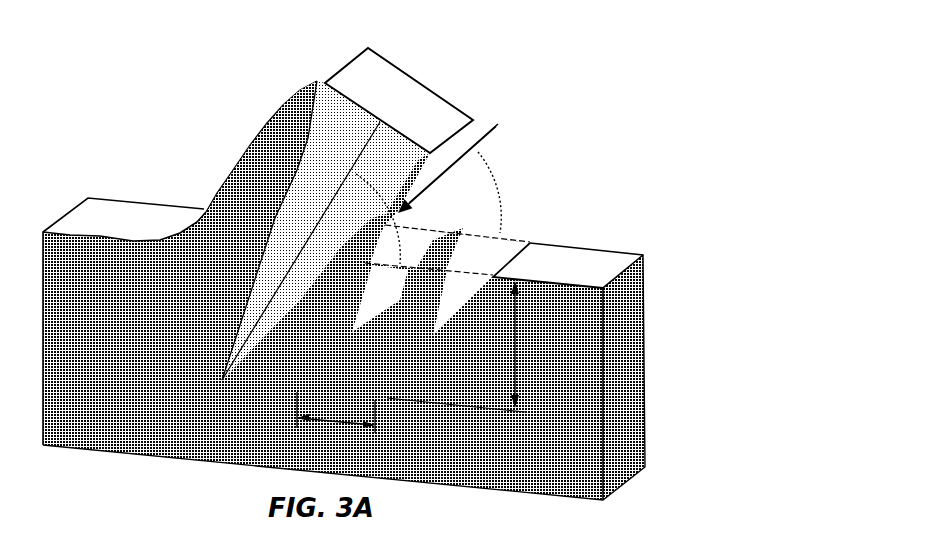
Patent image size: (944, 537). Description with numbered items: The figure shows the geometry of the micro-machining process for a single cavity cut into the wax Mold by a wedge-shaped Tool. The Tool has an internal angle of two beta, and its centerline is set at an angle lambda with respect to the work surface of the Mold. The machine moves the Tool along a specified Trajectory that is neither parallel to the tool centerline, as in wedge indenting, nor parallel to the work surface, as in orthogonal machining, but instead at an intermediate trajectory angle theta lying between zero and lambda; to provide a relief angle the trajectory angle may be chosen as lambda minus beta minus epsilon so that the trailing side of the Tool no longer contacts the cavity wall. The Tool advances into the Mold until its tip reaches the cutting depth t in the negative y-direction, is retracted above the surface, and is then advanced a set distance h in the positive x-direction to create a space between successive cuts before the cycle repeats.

The mold Mold is at (344, 290).
The wedge-shaped tool Tool is at (409, 201).
The tool trajectory Trajectory is at (504, 162).
The cutting depth t is at (463, 346).
The groove spacing h is at (336, 424).